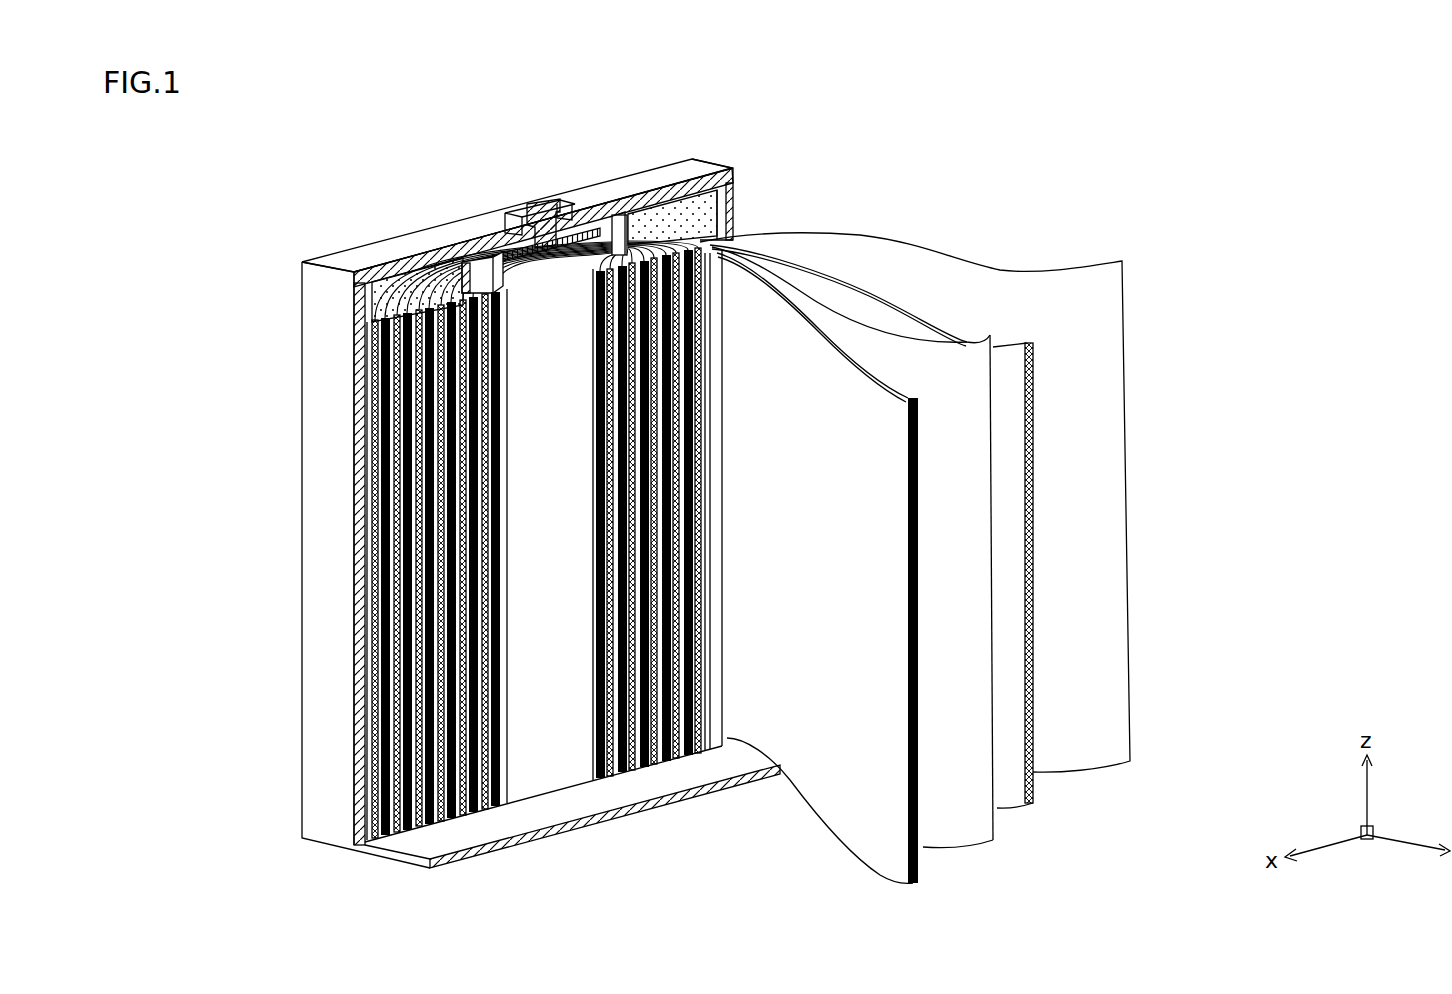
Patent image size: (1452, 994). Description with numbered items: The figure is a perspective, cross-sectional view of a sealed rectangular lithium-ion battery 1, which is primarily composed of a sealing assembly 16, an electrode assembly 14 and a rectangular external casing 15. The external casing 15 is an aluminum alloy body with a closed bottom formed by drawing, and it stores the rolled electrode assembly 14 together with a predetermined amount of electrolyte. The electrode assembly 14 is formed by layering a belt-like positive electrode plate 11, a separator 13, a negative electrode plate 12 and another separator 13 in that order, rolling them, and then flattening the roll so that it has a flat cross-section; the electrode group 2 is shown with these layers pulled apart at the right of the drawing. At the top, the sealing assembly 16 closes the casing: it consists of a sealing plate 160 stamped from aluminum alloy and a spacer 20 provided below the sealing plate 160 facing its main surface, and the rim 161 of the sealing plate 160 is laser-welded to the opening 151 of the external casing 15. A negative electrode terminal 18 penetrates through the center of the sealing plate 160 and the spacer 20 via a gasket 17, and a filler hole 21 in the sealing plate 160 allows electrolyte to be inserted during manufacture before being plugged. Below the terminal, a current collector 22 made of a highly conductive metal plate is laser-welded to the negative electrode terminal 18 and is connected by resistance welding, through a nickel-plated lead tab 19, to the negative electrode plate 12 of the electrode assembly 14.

The battery 1 is at (831, 78).
The electrode assembly 2 is at (1112, 220).
The positive electrode plate 11 is at (783, 258).
The negative electrode plate 12 is at (1030, 437).
The separator 13 is at (967, 268).
The electrode assembly 14 is at (358, 628).
The external casing 15 is at (320, 445).
The sealing assembly 16 is at (687, 157).
The sealing plate 160 is at (630, 183).
The rim 161 is at (702, 158).
The opening 151 is at (734, 170).
The gasket 17 is at (518, 212).
The negative electrode terminal 18 is at (537, 203).
The lead tab 19 is at (478, 291).
The spacer 20 is at (700, 213).
The filler hole 21 is at (408, 252).
The current collector 22 is at (600, 224).